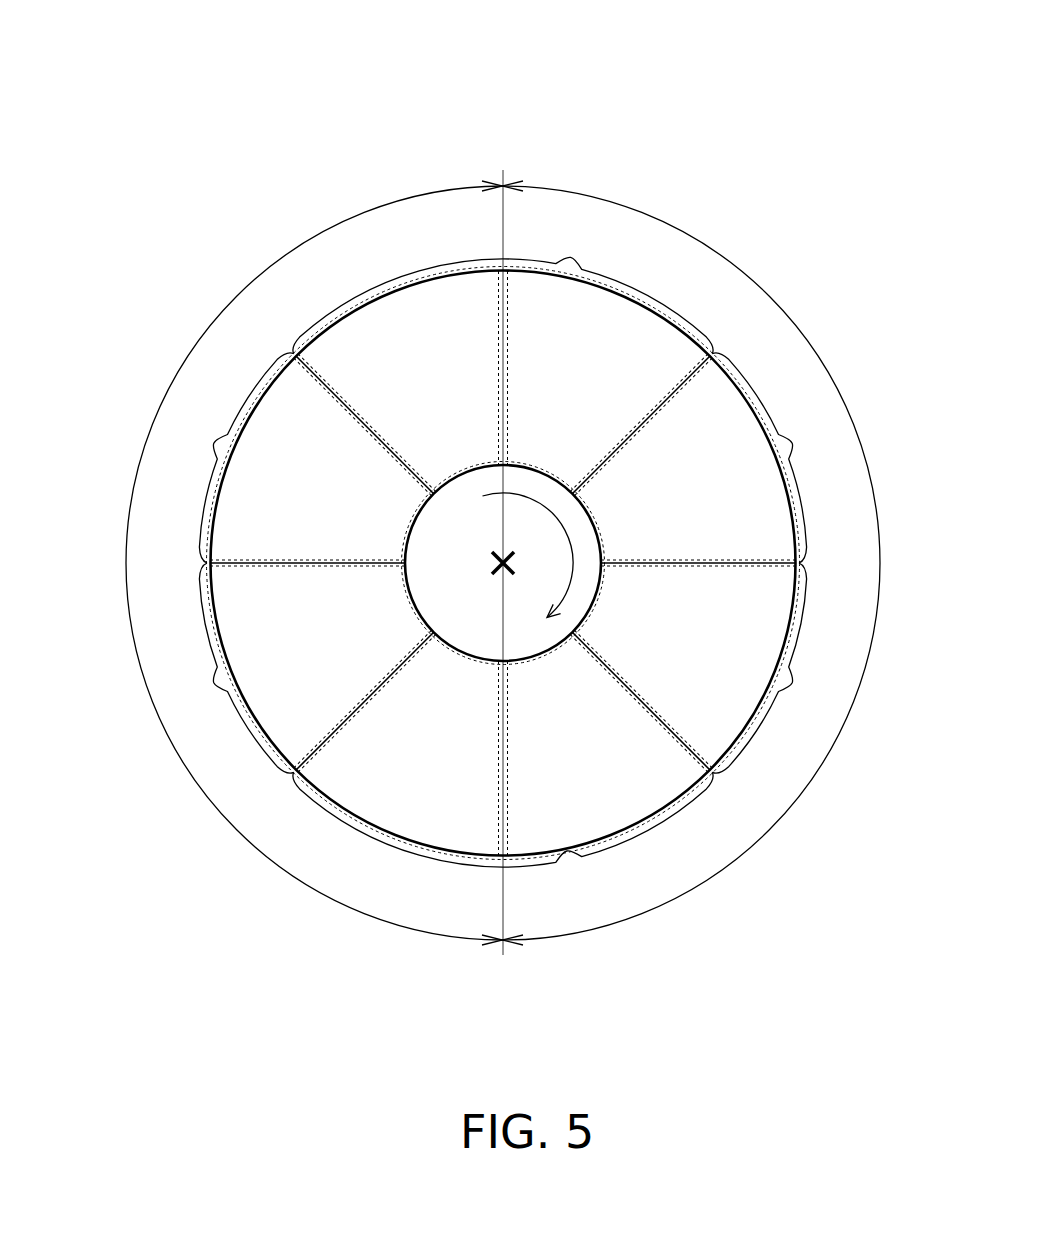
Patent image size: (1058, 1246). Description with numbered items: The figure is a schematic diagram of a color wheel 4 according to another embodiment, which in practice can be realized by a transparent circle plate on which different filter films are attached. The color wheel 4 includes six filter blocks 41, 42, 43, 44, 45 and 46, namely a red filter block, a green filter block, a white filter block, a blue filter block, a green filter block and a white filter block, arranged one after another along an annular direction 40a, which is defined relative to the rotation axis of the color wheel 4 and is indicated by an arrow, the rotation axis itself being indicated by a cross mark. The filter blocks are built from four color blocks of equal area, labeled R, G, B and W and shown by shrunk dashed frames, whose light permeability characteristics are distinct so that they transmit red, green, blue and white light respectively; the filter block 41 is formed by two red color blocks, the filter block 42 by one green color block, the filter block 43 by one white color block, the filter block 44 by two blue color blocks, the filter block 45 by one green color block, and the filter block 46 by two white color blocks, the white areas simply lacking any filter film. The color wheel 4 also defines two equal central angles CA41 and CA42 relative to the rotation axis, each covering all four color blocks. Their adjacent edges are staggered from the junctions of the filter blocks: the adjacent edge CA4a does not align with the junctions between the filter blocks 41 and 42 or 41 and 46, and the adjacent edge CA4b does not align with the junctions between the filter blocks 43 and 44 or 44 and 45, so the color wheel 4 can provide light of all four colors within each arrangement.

The color wheel 4 is at (758, 98).
The annular direction 40a is at (528, 569).
The filter block 41 is at (503, 290).
The filter block 42 is at (772, 458).
The filter block 43 is at (771, 668).
The filter block 44 is at (503, 839).
The filter block 45 is at (235, 668).
The filter block 46 is at (235, 458).
The central angle CA41 is at (723, 560).
The central angle CA42 is at (282, 565).
The adjacent edge CA4a is at (500, 322).
The adjacent edge CA4b is at (500, 802).